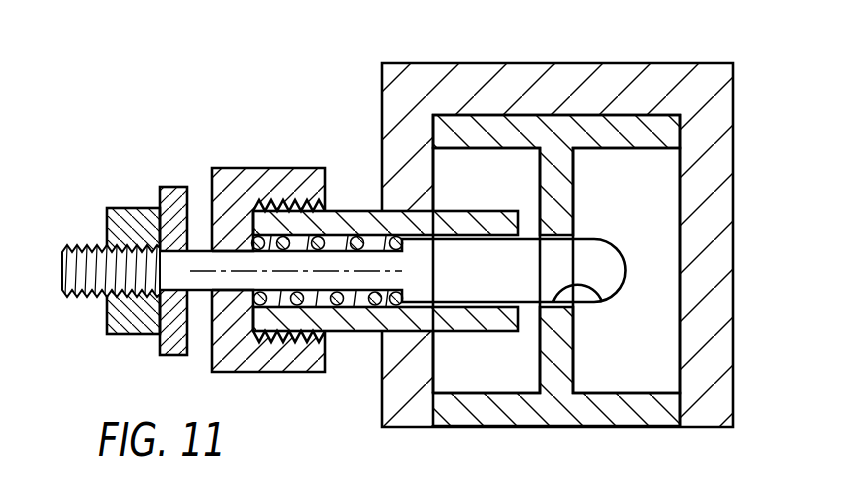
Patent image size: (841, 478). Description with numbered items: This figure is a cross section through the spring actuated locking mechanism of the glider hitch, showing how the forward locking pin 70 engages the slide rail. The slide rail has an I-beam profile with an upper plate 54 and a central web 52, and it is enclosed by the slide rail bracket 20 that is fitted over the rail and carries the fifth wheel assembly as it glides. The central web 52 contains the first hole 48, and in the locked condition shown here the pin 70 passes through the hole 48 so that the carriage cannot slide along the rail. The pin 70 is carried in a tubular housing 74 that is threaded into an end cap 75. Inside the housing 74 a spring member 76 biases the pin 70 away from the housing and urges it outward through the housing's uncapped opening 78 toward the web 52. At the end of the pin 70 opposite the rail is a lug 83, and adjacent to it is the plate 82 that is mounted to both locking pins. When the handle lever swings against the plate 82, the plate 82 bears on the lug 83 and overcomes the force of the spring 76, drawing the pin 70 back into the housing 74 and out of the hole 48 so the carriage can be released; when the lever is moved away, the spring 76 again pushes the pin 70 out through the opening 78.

The slide rail bracket 20 is at (528, 63).
The first hole 48 is at (600, 303).
The central web 52 is at (577, 175).
The upper plate 54 is at (632, 127).
The forward locking pin 70 is at (583, 250).
The tubular housing 74 is at (362, 333).
The end cap 75 is at (257, 168).
The spring member 76 is at (360, 235).
The uncapped opening 78 is at (522, 238).
The plate 82 is at (172, 187).
The lug 83 is at (118, 208).